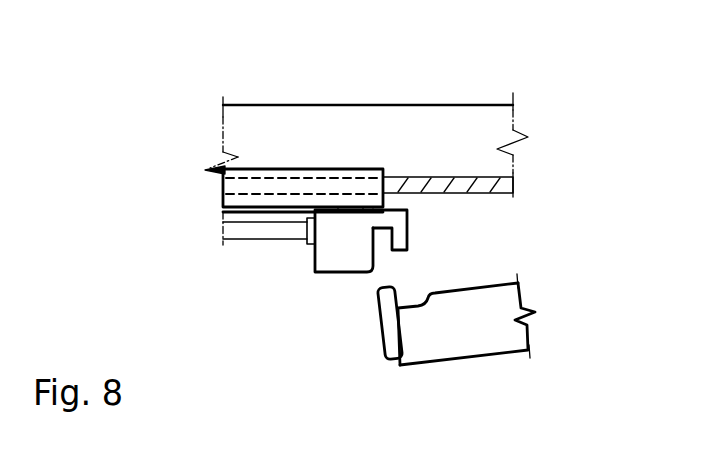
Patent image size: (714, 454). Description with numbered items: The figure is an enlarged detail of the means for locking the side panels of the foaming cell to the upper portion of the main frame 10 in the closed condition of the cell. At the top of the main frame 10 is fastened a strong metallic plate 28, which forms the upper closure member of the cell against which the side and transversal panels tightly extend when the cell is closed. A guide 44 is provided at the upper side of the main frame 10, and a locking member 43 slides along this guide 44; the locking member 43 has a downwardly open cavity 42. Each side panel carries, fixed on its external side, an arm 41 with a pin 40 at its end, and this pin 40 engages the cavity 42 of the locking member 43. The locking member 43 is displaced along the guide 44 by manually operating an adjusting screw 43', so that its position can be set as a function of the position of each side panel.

The main frame 10 is at (383, 127).
The strong metallic plate 28 is at (493, 188).
The pin 40 is at (392, 331).
The arm 41 is at (478, 343).
The downwardly open cavity 42 is at (385, 248).
The locking member 43 is at (297, 274).
The adjusting screw 43' is at (222, 259).
The guide 44 is at (278, 175).